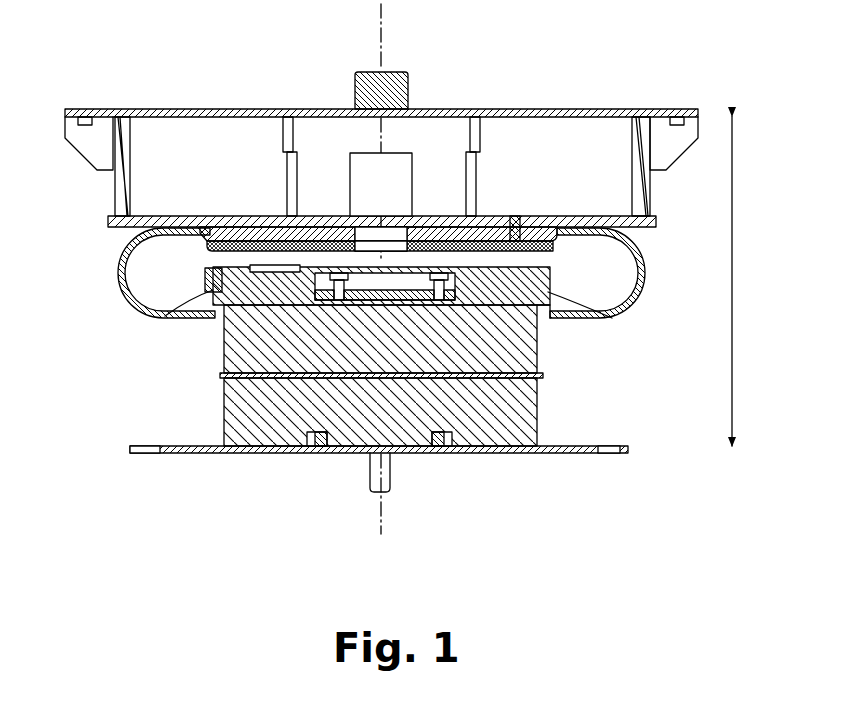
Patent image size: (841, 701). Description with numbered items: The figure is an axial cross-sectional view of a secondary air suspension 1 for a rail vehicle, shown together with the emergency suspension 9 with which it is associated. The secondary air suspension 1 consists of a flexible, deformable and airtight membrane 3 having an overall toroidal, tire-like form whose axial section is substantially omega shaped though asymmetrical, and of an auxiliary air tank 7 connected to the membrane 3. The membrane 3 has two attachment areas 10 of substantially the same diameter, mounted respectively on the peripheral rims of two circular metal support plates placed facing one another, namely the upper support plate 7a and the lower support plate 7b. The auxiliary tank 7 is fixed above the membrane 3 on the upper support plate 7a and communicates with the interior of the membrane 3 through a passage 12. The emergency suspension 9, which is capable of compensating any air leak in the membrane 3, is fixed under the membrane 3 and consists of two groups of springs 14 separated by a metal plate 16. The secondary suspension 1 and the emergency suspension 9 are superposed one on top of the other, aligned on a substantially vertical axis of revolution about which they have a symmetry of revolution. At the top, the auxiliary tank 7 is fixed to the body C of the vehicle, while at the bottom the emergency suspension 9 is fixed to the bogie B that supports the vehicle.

The secondary air suspension 1 is at (406, 269).
The membrane 3 is at (640, 305).
The auxiliary air tank 7 is at (381, 123).
The upper metal support plate 7a is at (531, 216).
The lower metal support plate 7b is at (537, 293).
The emergency suspension 9 is at (366, 375).
The attachment areas 10 is at (228, 233).
The passage 12 is at (402, 233).
The groups of springs 14 is at (527, 395).
The metal plate 16 is at (222, 378).
The body of the vehicle C is at (605, 109).
The bogie B is at (588, 455).